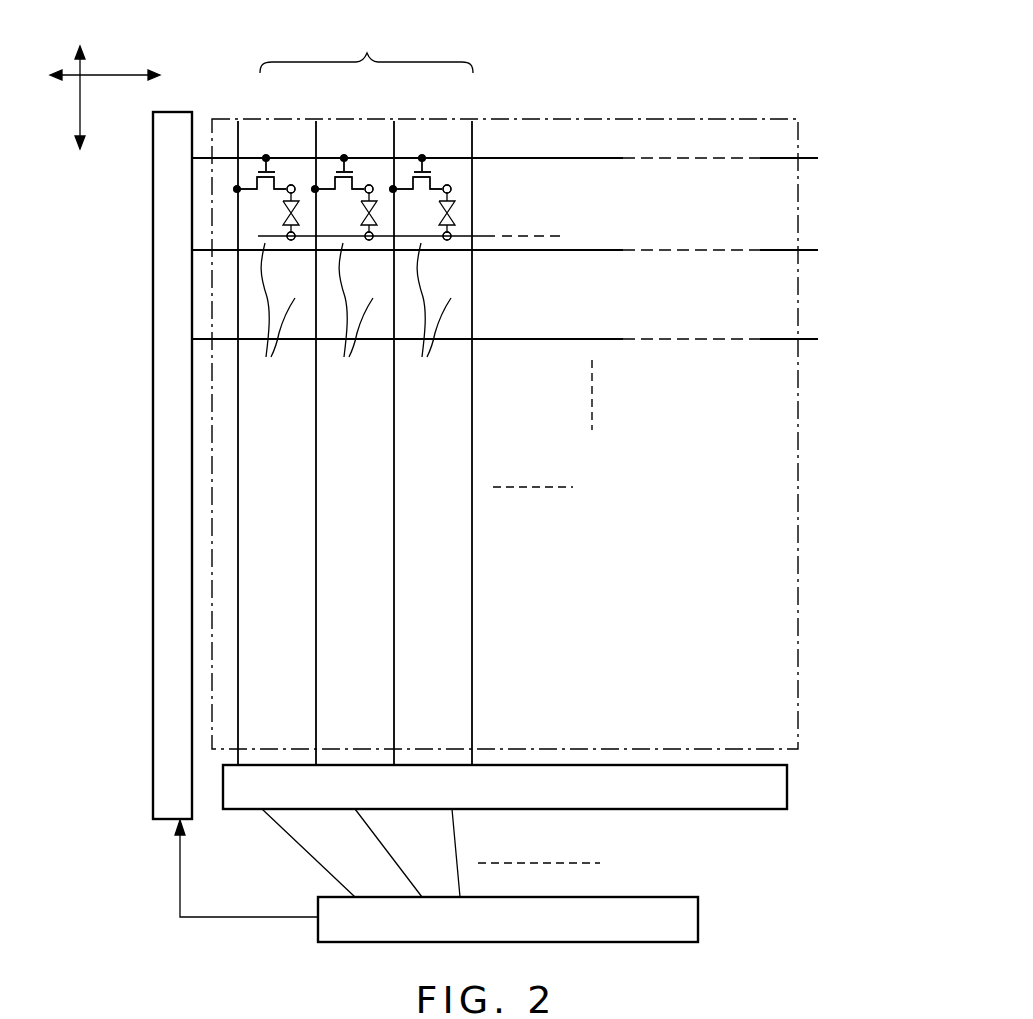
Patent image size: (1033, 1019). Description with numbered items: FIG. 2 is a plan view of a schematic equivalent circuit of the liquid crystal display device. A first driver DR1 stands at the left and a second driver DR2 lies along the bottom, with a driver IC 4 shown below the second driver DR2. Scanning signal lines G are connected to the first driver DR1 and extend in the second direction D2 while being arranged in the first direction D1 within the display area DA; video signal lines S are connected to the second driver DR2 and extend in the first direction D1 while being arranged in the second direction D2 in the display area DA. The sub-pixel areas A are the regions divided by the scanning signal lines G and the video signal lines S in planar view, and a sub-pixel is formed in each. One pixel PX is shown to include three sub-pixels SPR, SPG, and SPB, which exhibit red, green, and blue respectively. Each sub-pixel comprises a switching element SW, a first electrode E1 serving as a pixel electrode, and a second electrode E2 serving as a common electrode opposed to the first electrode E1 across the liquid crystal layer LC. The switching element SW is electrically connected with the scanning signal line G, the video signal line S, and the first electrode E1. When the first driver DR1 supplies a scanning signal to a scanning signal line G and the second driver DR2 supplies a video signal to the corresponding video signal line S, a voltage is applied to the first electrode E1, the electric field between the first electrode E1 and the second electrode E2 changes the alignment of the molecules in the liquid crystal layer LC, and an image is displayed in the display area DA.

The first direction D1 is at (77, 112).
The second direction D2 is at (123, 76).
The first driver DR1 is at (153, 375).
The second driver DR2 is at (787, 790).
The display area DA is at (680, 119).
The scanning signal line G is at (602, 158).
The video signal line S is at (238, 570).
The pixel PX is at (366, 52).
The red sub-pixel SPR is at (290, 168).
The green sub-pixel SPG is at (368, 168).
The blue sub-pixel SPB is at (446, 168).
The switching element SW is at (433, 175).
The first electrode E1 is at (451, 190).
The liquid crystal layer LC is at (455, 212).
The second electrode E2 is at (450, 239).
The sub-pixel area A is at (353, 312).
The driver IC 4 is at (698, 923).